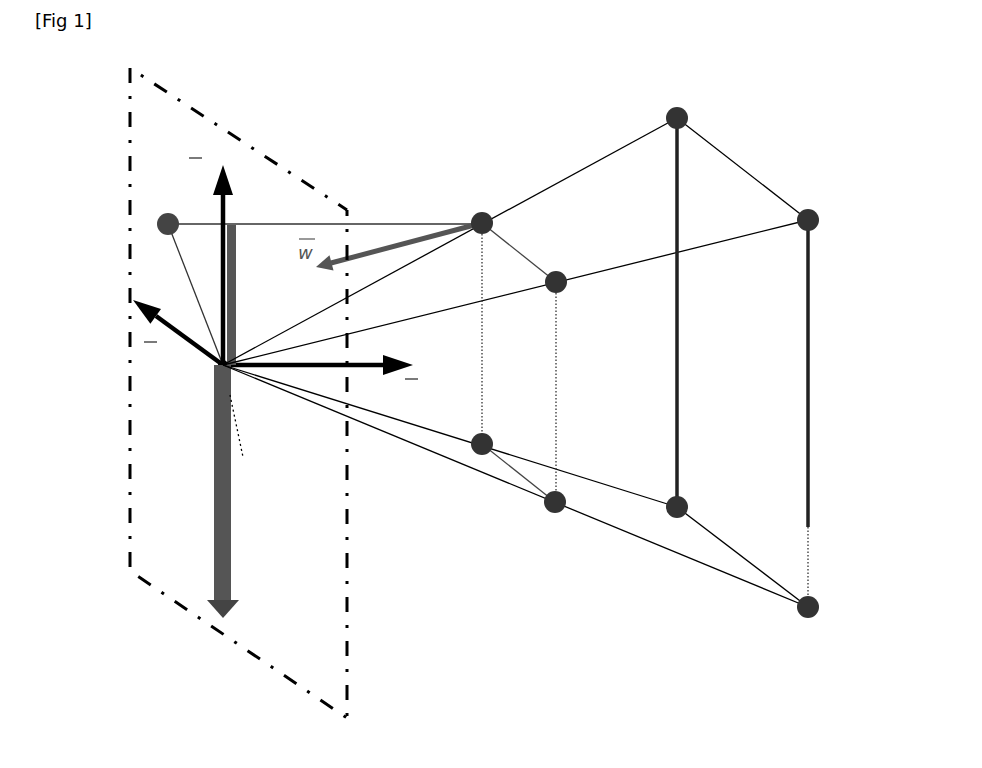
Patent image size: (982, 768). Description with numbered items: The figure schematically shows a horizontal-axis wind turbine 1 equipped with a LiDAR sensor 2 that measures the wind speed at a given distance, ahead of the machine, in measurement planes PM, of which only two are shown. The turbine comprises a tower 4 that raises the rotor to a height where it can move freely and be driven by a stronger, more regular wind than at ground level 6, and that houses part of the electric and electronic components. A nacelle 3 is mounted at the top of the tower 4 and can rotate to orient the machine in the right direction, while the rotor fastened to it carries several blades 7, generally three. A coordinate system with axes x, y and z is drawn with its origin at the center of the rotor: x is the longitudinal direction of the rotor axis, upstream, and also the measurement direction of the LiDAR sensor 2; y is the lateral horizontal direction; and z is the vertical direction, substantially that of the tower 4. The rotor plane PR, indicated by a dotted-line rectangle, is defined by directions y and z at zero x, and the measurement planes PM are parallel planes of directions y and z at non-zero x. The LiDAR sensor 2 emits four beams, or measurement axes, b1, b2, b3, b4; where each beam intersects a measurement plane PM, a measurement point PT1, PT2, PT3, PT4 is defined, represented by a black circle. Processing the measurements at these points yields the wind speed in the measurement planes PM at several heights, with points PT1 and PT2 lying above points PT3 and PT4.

The horizontal-axis wind turbine 1 is at (258, 211).
The LiDAR sensor 2 is at (201, 368).
The nacelle 3 is at (221, 388).
The tower 4 is at (223, 508).
The ground level 6 is at (211, 604).
The blades 7 is at (250, 442).
The rotor plane PR is at (152, 599).
The measurement point PT1 is at (472, 214).
The measurement point PT2 is at (562, 278).
The measurement point PT3 is at (555, 515).
The measurement point PT4 is at (478, 436).
The beam b1 is at (527, 195).
The beam b2 is at (749, 234).
The beam b3 is at (646, 548).
The beam b4 is at (426, 436).
The measurement planes PM is at (525, 413).